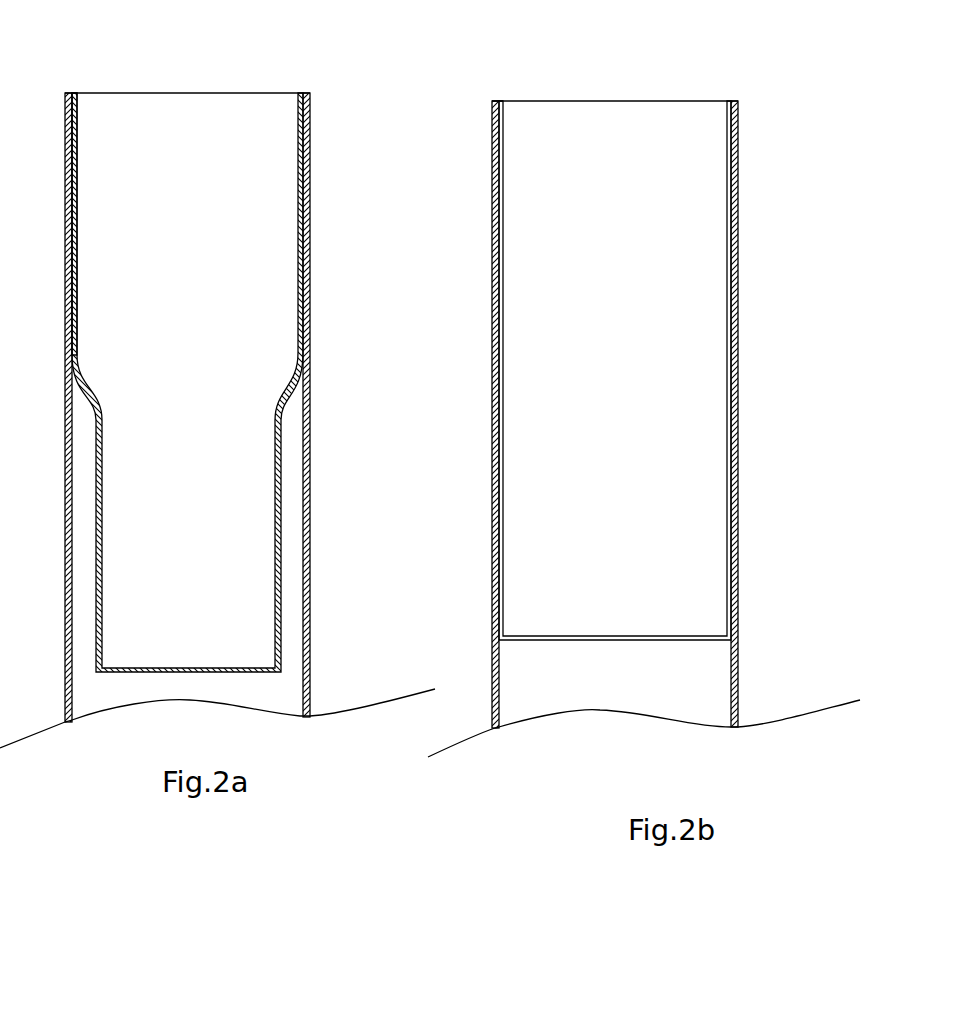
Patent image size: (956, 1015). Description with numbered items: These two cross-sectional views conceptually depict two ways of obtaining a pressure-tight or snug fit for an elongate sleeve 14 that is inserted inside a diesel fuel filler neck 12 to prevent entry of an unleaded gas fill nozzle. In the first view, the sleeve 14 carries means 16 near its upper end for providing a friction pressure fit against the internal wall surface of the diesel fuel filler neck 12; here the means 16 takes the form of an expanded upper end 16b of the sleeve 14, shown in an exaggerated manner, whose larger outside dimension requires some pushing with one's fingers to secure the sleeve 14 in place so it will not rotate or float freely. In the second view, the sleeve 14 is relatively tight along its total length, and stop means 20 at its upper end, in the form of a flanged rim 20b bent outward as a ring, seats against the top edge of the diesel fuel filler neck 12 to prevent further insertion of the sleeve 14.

In FIG. 2A, the diesel fuel filler neck 12 is at (310, 529).
In FIG. 2B, the diesel fuel filler neck 12 is at (738, 421).
In FIG. 2A, the elongate sleeve 14 is at (246, 335).
In FIG. 2B, the elongate sleeve 14 is at (673, 347).
In FIG. 2A, the means for providing a snug fit 16 is at (298, 158).
In FIG. 2A, the expanded upper end 16b is at (77, 262).
In FIG. 2B, the stop means 20 is at (504, 98).
In FIG. 2B, the flanged rim 20b is at (492, 100).